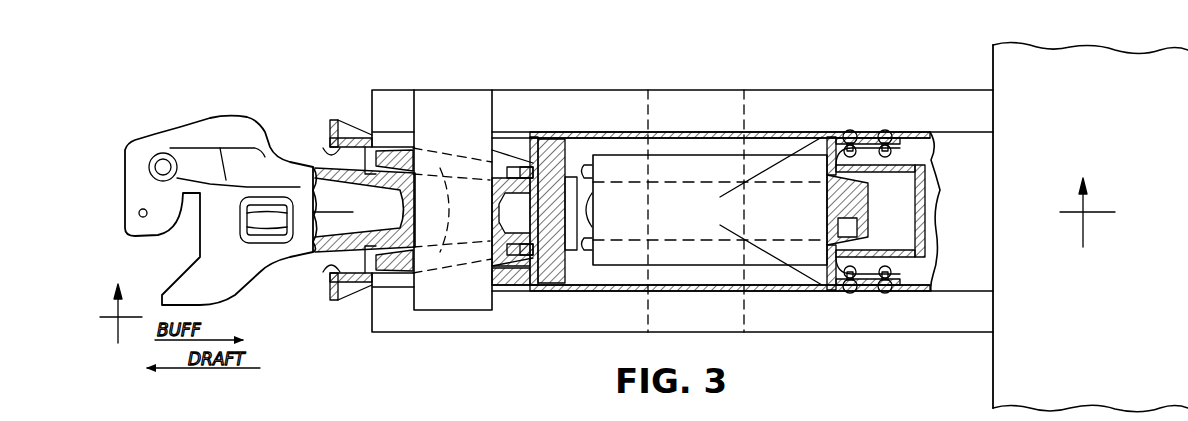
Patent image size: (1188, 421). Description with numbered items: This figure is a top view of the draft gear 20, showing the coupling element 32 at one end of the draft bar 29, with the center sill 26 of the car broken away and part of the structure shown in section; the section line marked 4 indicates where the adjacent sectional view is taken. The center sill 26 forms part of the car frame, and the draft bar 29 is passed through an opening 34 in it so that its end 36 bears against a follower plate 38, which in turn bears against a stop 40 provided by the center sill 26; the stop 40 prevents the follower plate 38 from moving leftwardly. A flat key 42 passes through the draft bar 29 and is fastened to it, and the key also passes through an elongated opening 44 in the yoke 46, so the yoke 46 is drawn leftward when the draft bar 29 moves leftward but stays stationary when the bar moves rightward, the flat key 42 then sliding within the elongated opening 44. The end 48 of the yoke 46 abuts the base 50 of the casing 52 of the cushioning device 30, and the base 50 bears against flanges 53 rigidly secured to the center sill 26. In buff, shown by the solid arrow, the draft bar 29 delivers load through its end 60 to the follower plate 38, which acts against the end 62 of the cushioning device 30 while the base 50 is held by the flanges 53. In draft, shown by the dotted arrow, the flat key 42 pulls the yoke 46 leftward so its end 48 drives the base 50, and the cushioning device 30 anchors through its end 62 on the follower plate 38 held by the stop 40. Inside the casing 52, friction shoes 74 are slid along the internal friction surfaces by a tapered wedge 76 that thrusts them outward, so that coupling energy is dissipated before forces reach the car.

The section line 4- 4 is at (607, 255).
The draft gear 20 is at (800, 87).
The center sill 26 is at (903, 135).
The draft bar 29 is at (354, 242).
The cushioning device 30 is at (722, 167).
The coupling element 32 is at (241, 128).
The opening 34 is at (314, 151).
The end of draft bar 36 is at (542, 188).
The follower plate 38 is at (565, 178).
The stop 40 is at (525, 280).
The flat key 42 is at (448, 297).
The elongated opening 44 is at (508, 168).
The yoke 46 is at (392, 158).
The end of yoke 48 is at (868, 225).
The base of casing 50 is at (820, 268).
The casing 52 is at (682, 162).
The flanges 53 is at (870, 137).
The end of draft bar 60 is at (518, 233).
The end of cushioning device 62 is at (571, 183).
The friction shoes 74 is at (592, 203).
The wedge 76 is at (592, 178).